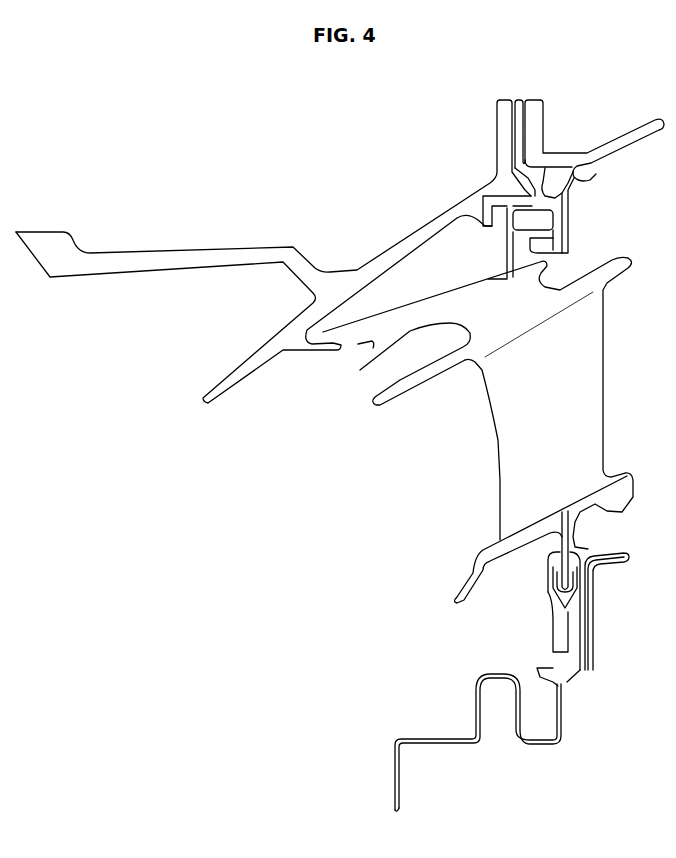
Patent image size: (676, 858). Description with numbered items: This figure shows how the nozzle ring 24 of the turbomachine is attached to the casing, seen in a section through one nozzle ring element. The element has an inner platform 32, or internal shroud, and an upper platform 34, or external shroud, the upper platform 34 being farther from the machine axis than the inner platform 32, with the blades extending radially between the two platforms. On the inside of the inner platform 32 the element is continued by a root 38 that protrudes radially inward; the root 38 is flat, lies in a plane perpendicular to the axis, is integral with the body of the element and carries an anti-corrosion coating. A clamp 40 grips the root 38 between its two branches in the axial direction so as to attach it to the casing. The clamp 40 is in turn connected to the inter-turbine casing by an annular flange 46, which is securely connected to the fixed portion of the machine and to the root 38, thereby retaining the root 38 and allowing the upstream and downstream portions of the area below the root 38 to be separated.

The nozzle ring 24 is at (563, 417).
The inner platform 32 is at (620, 493).
The upper platform 34 is at (411, 387).
The root 38 is at (592, 548).
The clamp 40 is at (548, 592).
The annular flange 46 is at (563, 742).